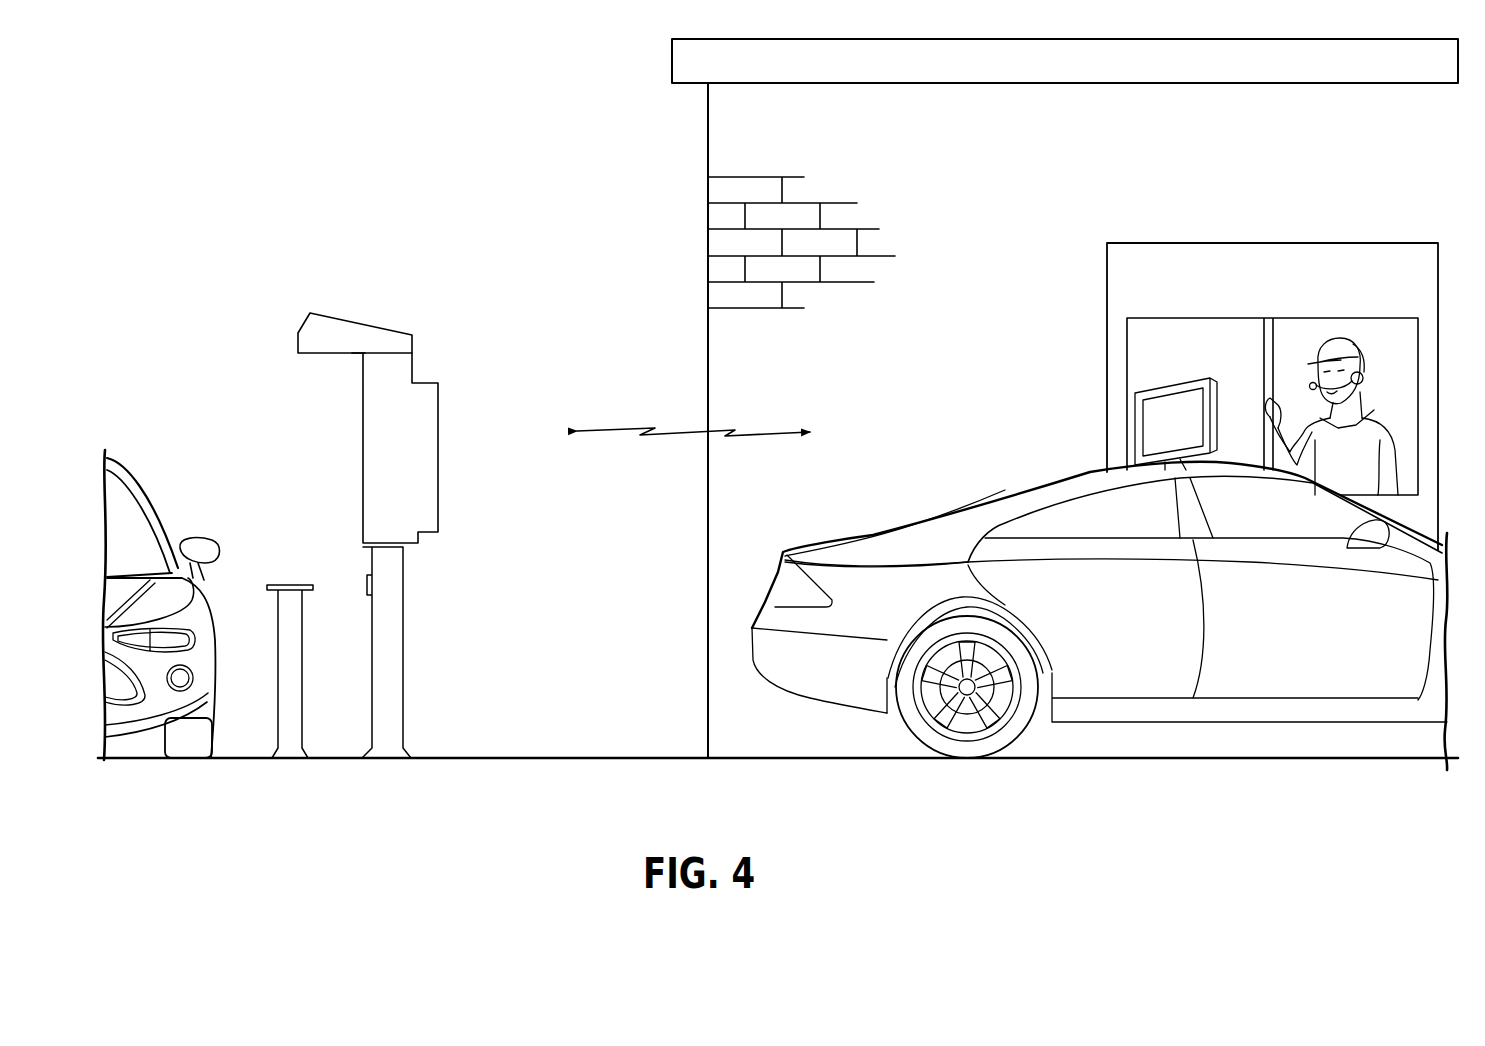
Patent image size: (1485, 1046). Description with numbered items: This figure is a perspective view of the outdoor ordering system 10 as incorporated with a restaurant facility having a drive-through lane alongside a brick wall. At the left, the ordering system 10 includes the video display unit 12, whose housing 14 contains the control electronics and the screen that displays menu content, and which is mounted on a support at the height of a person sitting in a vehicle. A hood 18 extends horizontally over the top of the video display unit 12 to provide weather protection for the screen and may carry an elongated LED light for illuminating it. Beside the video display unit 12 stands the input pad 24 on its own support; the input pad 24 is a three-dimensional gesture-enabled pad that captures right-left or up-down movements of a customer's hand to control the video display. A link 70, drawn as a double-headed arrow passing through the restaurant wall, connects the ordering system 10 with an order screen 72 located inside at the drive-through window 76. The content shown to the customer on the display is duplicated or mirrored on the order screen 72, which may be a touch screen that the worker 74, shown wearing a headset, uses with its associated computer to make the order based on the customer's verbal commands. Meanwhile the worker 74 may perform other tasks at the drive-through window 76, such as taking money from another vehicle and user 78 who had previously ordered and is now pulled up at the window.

The outdoor ordering system 10 is at (368, 495).
The video display unit 12 is at (444, 441).
The housing 14 is at (418, 540).
The hood 18 is at (373, 327).
The input pad 24 is at (292, 581).
The link 70 is at (768, 431).
The order screen 72 is at (1185, 398).
The worker 74 is at (1373, 418).
The drive-through window 76 is at (1411, 272).
The vehicle and user 78 is at (985, 500).